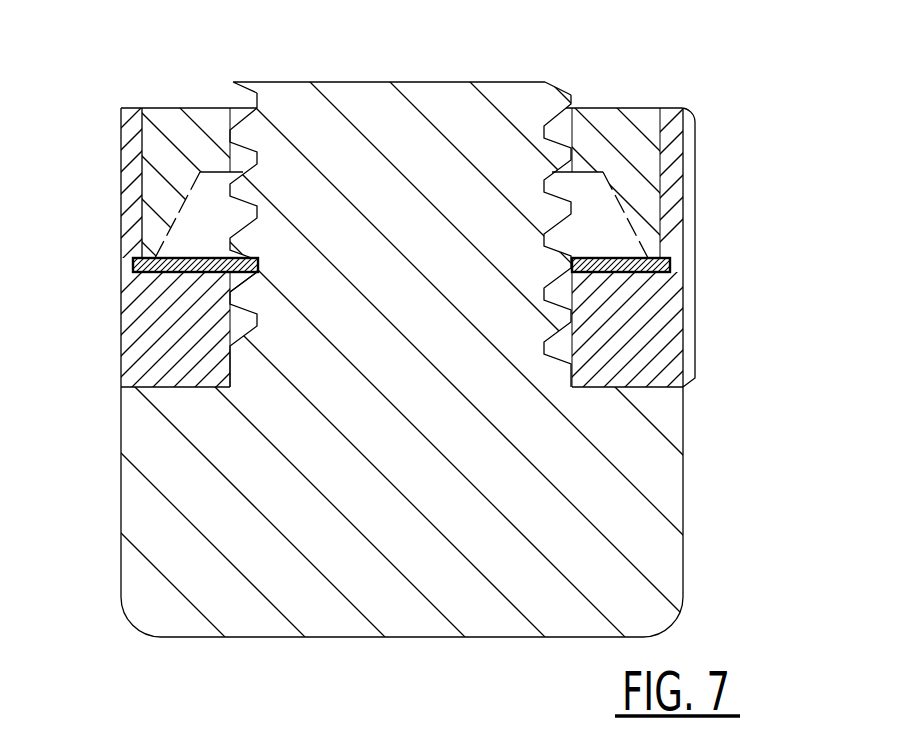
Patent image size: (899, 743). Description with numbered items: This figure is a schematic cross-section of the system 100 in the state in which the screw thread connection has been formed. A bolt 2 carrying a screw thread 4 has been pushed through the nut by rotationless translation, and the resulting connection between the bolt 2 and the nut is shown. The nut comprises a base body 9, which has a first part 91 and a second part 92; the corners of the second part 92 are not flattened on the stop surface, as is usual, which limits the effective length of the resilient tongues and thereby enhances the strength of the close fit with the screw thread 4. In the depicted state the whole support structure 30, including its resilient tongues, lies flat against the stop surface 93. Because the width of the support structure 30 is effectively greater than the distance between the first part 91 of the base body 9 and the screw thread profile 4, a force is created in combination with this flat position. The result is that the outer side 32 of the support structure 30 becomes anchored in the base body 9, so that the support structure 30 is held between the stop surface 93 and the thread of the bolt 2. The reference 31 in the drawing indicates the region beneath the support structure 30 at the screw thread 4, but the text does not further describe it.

The bolt 2 is at (375, 118).
The screw thread 4 is at (546, 124).
The base body 9 is at (658, 324).
The support structure 30 is at (167, 275).
The sealing contact 31 is at (283, 303).
The outer side of support structure 32 is at (710, 265).
The first part of base body 91 is at (672, 176).
The second part of base body 92 is at (147, 362).
The stop surface 93 is at (620, 292).
The system 100 is at (730, 81).